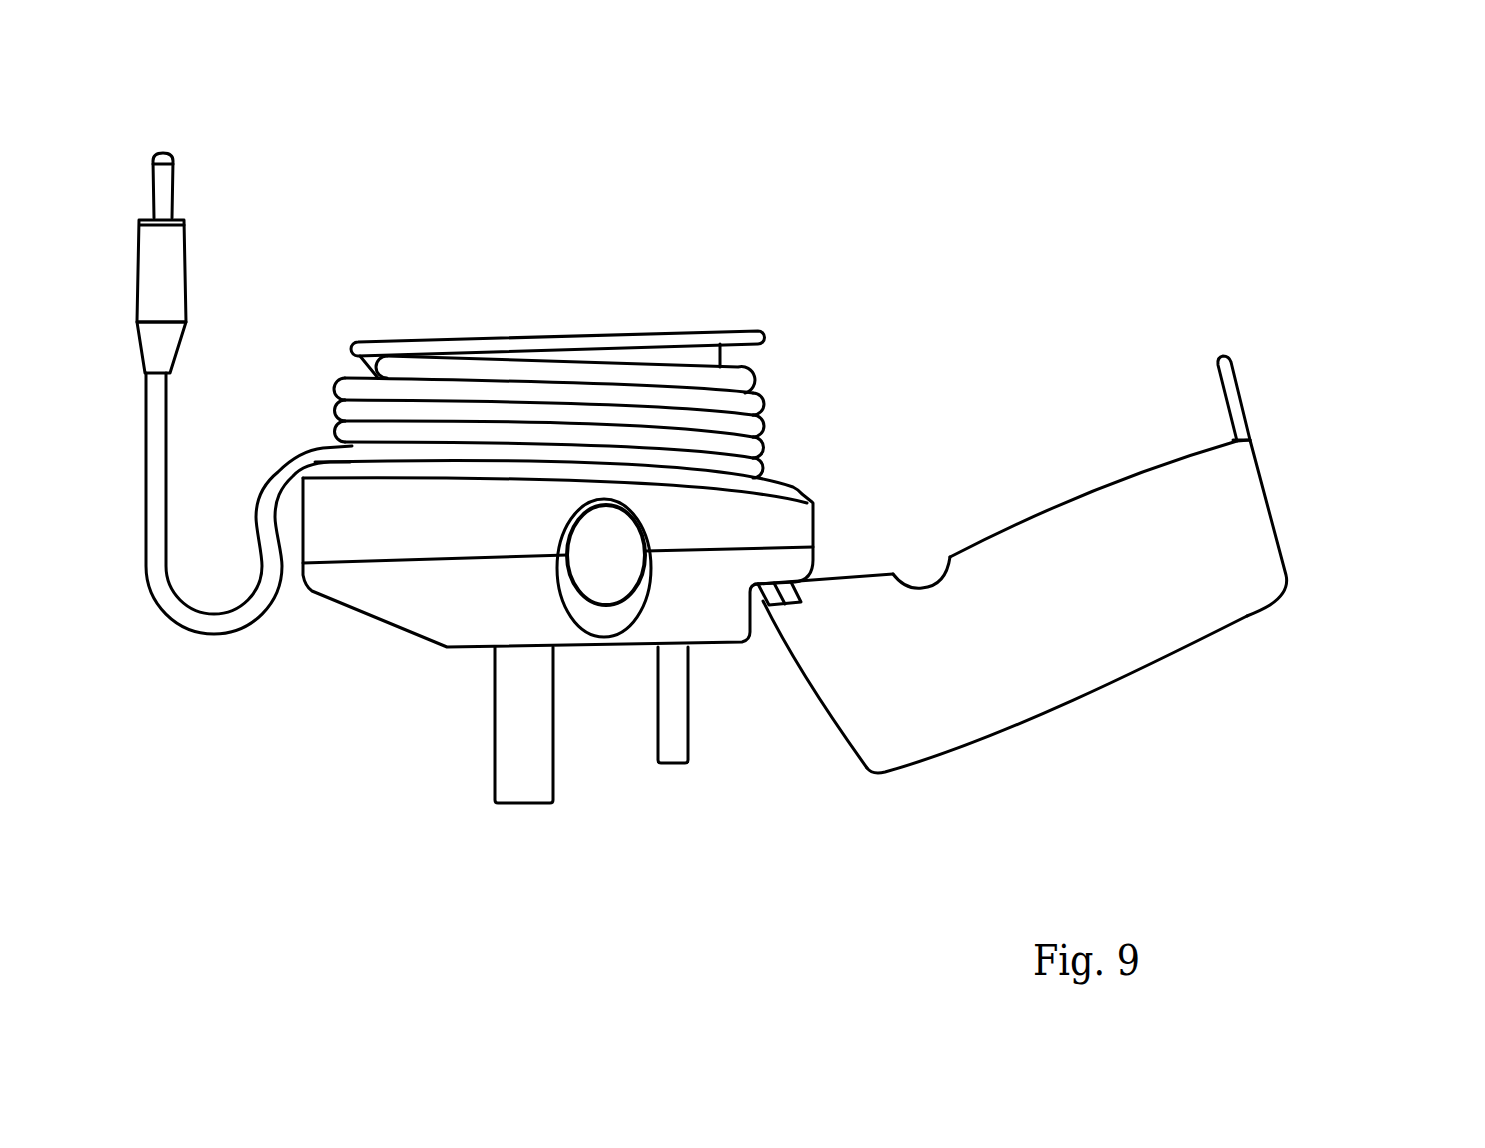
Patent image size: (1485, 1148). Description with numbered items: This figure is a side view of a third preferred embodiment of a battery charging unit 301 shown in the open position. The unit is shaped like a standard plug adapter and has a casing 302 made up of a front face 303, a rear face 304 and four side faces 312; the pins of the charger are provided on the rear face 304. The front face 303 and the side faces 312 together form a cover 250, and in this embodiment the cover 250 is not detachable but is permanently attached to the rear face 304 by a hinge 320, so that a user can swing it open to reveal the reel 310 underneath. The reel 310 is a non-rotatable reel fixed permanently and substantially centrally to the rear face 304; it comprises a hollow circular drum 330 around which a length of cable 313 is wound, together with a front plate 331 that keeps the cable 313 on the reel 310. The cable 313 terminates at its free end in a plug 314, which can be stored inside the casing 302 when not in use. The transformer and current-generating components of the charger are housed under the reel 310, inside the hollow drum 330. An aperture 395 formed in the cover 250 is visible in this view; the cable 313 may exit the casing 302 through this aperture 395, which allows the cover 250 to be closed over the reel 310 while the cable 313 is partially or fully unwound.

The battery charging unit 301 is at (942, 223).
The plug 314 is at (163, 253).
The reel 310 is at (652, 333).
The front plate 331 is at (525, 340).
The hollow circular drum 330 is at (707, 360).
The cable 313 is at (737, 387).
The side faces 312 is at (415, 535).
The rear face 304 is at (415, 637).
The hinge 320 is at (760, 604).
The casing 302 is at (1233, 545).
The aperture 395 is at (930, 573).
The cover 250 is at (1157, 615).
The front face 303 is at (1097, 692).